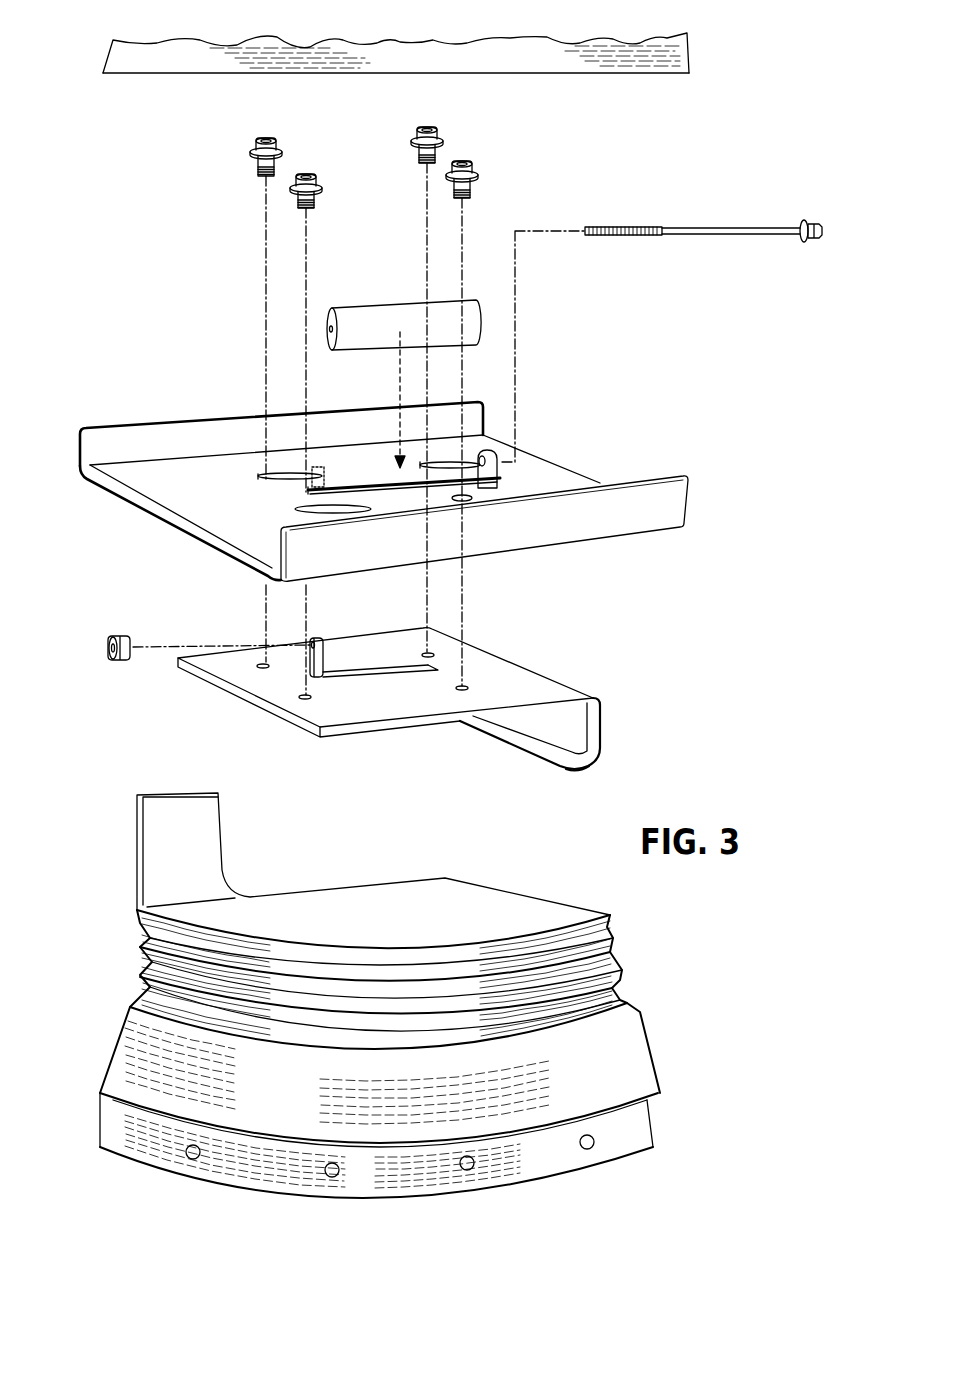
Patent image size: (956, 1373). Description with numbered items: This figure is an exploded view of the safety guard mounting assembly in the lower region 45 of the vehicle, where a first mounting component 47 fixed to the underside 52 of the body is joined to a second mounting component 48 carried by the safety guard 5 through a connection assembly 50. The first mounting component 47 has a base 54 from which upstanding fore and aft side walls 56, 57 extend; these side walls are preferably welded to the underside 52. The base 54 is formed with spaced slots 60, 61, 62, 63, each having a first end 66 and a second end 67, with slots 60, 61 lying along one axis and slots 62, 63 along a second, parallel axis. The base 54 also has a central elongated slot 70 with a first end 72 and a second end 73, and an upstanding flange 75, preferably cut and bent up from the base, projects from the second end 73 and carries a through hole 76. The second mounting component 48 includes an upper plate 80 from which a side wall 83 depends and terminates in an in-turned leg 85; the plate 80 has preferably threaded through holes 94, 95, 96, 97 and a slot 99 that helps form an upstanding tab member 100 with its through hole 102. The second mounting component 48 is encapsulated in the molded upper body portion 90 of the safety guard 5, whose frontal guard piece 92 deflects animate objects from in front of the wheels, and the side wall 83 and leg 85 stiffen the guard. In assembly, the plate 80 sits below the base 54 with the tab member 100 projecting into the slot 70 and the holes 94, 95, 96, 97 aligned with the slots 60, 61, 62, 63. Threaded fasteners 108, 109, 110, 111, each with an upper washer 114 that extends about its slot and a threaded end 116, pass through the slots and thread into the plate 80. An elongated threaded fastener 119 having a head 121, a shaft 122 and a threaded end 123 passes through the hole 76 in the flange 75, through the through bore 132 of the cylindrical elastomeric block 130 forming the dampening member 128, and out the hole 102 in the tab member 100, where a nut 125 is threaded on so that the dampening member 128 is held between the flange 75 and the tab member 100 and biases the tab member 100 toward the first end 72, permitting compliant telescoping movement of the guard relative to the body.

The lower region 45 is at (452, 46).
The underside of body 52 is at (172, 75).
The connection assembly 50 is at (224, 162).
The threaded fastener 108 is at (249, 374).
The upper washer 114 is at (255, 150).
The threaded end 116 is at (258, 172).
The threaded fastener 110 is at (313, 174).
The threaded fastener 109 is at (434, 127).
The threaded fastener 111 is at (470, 162).
The elongated threaded fastener 119 is at (671, 306).
The shaft 122 is at (708, 228).
The threaded end 123 is at (598, 228).
The head 121 is at (810, 244).
The dampening member 128 is at (359, 354).
The cylindrical elastomeric block 130 is at (443, 311).
The through bore 132 is at (328, 330).
The first mounting component 47 is at (597, 467).
The aft side wall 57 is at (480, 420).
The base 54 is at (178, 513).
The fore side wall 56 is at (684, 500).
The slot 60 is at (295, 475).
The first end 66 is at (263, 477).
The second end 67 is at (320, 472).
The slot 61 is at (423, 466).
The through hole 76 is at (476, 464).
The second end 73 is at (498, 484).
The upstanding flange 75 is at (488, 462).
The central elongated slot 70 is at (390, 488).
The first end 72 is at (305, 491).
The slot 62 is at (335, 513).
The slot 63 is at (460, 501).
The second mounting component 48 is at (597, 669).
The upper plate 80 is at (510, 665).
The through hole 94 is at (260, 665).
The through hole 96 is at (302, 696).
The through hole 95 is at (430, 654).
The through hole 97 is at (465, 687).
The side wall 83 is at (590, 723).
The in-turned leg 85 is at (574, 753).
The upstanding tab member 100 is at (323, 661).
The through hole 102 is at (300, 645).
The slot 99 is at (356, 673).
The nut 125 is at (108, 645).
The safety guard 5 is at (632, 958).
The upper body portion 90 is at (530, 905).
The frontal guard piece 92 is at (620, 1040).